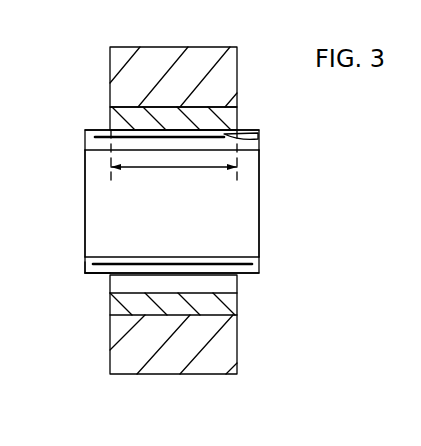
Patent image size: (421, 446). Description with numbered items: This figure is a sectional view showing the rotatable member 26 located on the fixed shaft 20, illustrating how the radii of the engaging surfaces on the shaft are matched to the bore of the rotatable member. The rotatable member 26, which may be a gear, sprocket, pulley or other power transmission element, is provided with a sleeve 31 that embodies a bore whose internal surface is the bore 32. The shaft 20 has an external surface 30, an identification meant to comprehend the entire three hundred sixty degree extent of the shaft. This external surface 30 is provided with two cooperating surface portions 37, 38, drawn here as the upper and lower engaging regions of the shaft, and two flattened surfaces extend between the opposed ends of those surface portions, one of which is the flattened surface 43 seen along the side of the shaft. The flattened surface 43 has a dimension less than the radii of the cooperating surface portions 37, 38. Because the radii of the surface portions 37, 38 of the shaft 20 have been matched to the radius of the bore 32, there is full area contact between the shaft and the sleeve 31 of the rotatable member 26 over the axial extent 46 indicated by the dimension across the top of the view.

The shaft 20 is at (266, 192).
The rotatable member 26 is at (118, 66).
The sleeve 31 is at (118, 121).
The cooperating surface portion 37 is at (95, 129).
The bore 32 is at (259, 139).
The axial extent 46 is at (183, 169).
The flattened surface 43 is at (243, 227).
The cooperating surface portion 38 is at (248, 276).
The external surface 30 is at (88, 281).